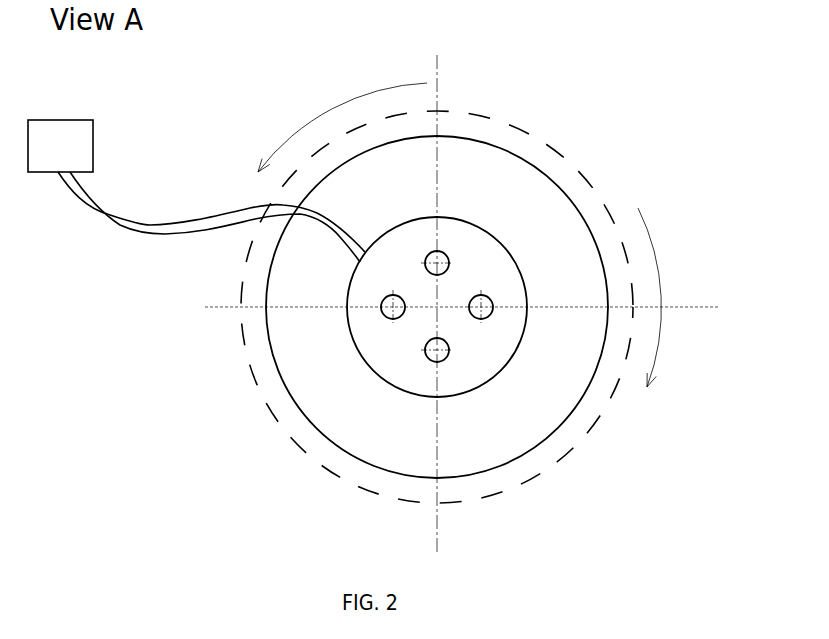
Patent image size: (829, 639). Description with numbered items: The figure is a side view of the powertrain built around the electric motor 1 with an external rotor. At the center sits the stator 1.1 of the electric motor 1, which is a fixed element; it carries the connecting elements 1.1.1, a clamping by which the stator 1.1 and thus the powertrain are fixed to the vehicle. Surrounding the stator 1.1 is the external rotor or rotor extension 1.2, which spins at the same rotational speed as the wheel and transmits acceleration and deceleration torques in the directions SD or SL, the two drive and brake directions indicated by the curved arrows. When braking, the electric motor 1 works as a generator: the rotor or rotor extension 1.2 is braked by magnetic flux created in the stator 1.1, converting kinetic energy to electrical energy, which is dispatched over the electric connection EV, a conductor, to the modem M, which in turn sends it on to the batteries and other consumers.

The electric motor 1 is at (253, 370).
The stator 1.1 is at (503, 242).
The external rotor or rotor extension 1.2 is at (468, 137).
The connecting elements 1.1.1 is at (480, 310).
The modem M is at (42, 172).
The electric connection EV is at (113, 212).
The direction of drive and brake SL is at (342, 121).
The direction of drive and brake SD is at (673, 297).